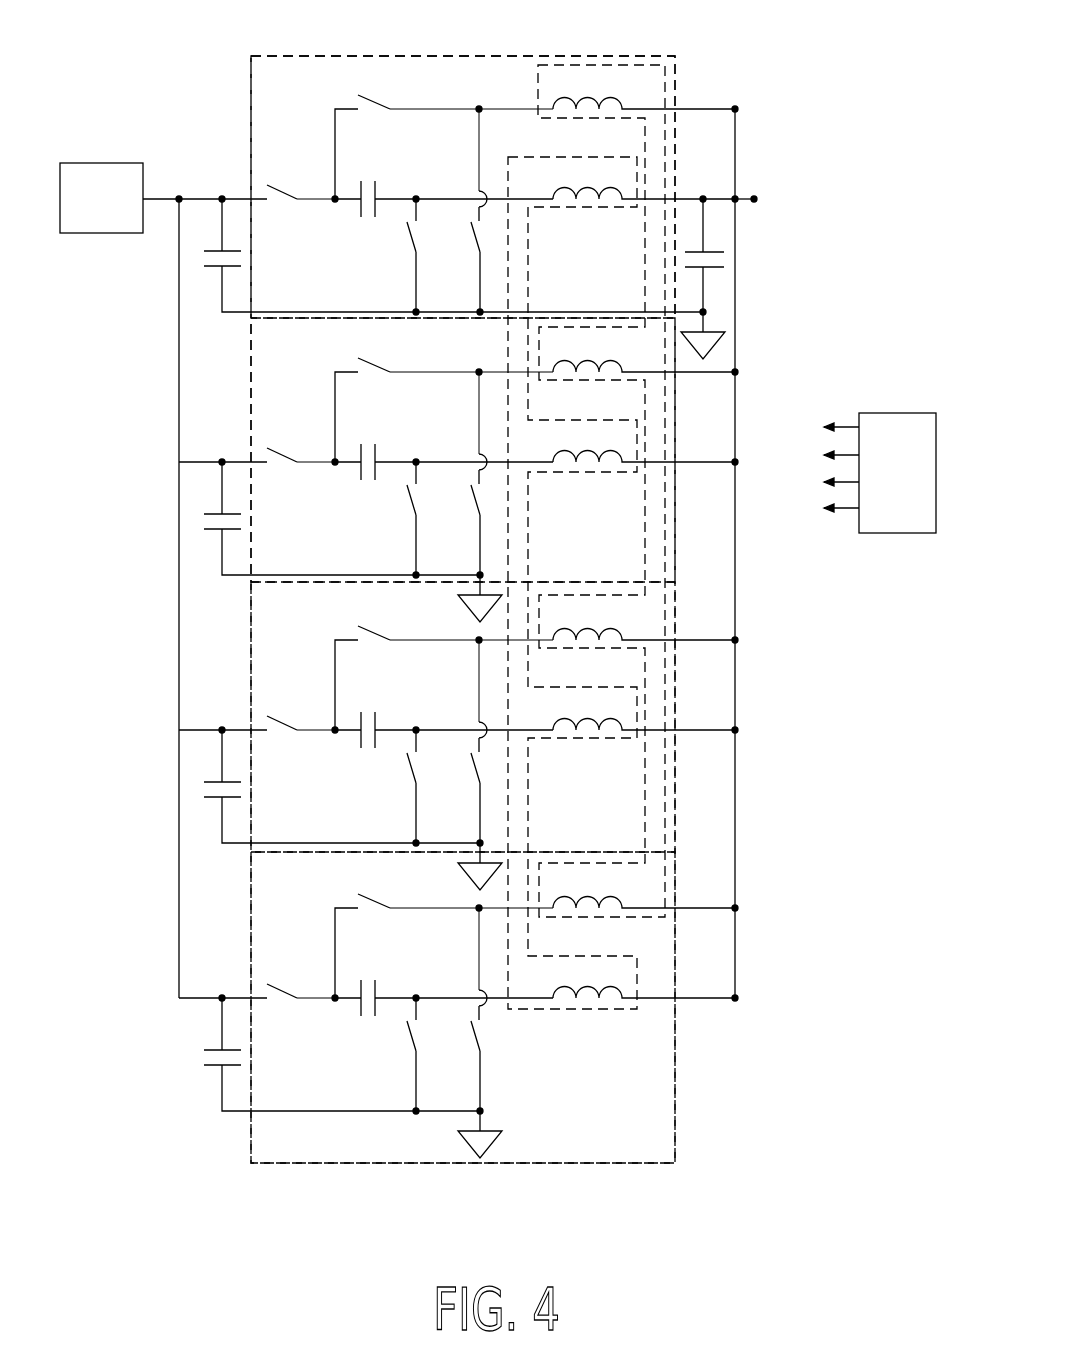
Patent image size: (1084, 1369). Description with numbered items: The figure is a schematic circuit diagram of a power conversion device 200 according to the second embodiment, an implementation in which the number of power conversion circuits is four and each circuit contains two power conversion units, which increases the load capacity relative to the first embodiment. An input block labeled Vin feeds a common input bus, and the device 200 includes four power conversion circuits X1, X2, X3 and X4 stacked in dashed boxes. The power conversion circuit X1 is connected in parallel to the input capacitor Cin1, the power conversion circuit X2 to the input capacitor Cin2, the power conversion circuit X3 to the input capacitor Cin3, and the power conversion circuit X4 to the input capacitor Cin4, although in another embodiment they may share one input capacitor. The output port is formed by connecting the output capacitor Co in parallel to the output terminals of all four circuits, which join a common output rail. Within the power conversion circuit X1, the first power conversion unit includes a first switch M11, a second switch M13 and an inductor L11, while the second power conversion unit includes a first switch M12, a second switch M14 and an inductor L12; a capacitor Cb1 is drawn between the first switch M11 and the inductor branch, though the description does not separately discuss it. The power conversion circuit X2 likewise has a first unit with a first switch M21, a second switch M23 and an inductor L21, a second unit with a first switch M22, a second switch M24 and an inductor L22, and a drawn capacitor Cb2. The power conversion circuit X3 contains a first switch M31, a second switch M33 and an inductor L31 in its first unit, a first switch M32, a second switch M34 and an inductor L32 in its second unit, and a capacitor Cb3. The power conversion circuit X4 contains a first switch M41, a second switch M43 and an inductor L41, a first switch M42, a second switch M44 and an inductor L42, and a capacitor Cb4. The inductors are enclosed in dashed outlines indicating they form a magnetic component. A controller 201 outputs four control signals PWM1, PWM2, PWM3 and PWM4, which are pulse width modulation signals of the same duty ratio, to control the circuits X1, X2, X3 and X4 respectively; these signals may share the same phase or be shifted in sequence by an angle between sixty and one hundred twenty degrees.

The power conversion device 200 is at (873, 43).
The controller 201 is at (907, 411).
The power conversion circuit X1 is at (463, 187).
The power conversion circuit X2 is at (463, 450).
The power conversion circuit X3 is at (463, 717).
The power conversion circuit X4 is at (463, 1007).
The input voltage source Vin is at (101, 187).
The output capacitor Co is at (705, 255).
The first switch M11 is at (301, 182).
The first switch M12 is at (444, 138).
The second switch M13 is at (391, 255).
The second switch M14 is at (460, 210).
The flying capacitor Cb1 is at (444, 188).
The inductor L11 is at (644, 183).
The inductor L12 is at (644, 93).
The input capacitor Cin1 is at (332, 255).
The first switch M21 is at (301, 445).
The first switch M22 is at (444, 401).
The second switch M23 is at (391, 518).
The second switch M24 is at (460, 473).
The flying capacitor Cb2 is at (444, 451).
The inductor L21 is at (644, 446).
The inductor L22 is at (644, 356).
The input capacitor Cin2 is at (332, 518).
The first switch M31 is at (301, 713).
The first switch M32 is at (444, 669).
The second switch M33 is at (391, 786).
The second switch M34 is at (460, 741).
The flying capacitor Cb3 is at (444, 719).
The inductor L31 is at (644, 714).
The inductor L32 is at (644, 624).
The input capacitor Cin3 is at (332, 786).
The first switch M41 is at (301, 981).
The first switch M42 is at (444, 937).
The second switch M43 is at (391, 1054).
The second switch M44 is at (460, 1009).
The flying capacitor Cb4 is at (444, 987).
The inductor L41 is at (644, 982).
The inductor L42 is at (644, 892).
The input capacitor Cin4 is at (332, 1054).
The control signal PWM1 is at (810, 427).
The control signal PWM2 is at (810, 455).
The control signal PWM3 is at (810, 482).
The control signal PWM4 is at (810, 508).